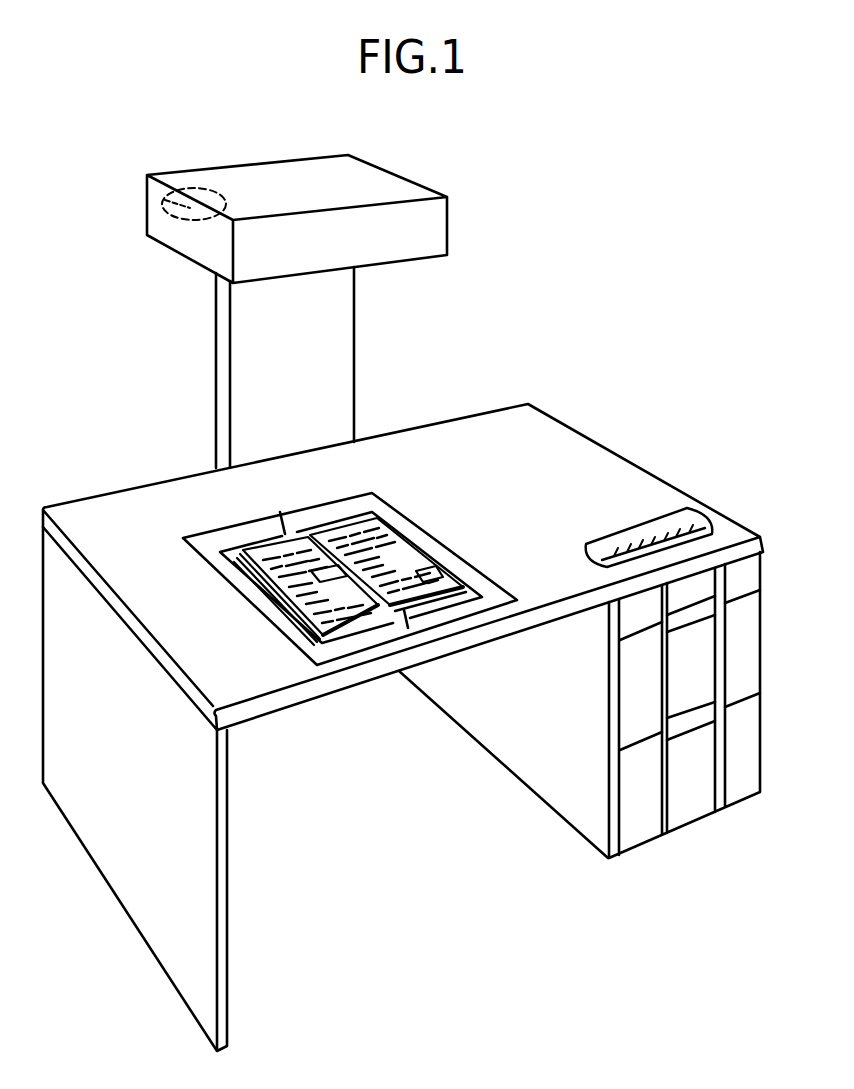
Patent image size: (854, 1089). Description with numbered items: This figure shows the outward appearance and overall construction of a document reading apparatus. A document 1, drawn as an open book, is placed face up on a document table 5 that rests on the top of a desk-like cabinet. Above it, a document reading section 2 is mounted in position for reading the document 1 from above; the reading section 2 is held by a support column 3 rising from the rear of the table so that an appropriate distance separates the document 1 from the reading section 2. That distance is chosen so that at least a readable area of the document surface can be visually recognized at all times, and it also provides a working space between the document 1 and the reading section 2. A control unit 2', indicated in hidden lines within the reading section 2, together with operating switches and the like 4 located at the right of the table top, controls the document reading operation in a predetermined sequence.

The document 1 is at (257, 585).
The document reading section 2 is at (313, 214).
The control unit 2' is at (186, 256).
The support column 3 is at (354, 347).
The operating switches 4 is at (702, 517).
The document placing table 5 is at (286, 512).